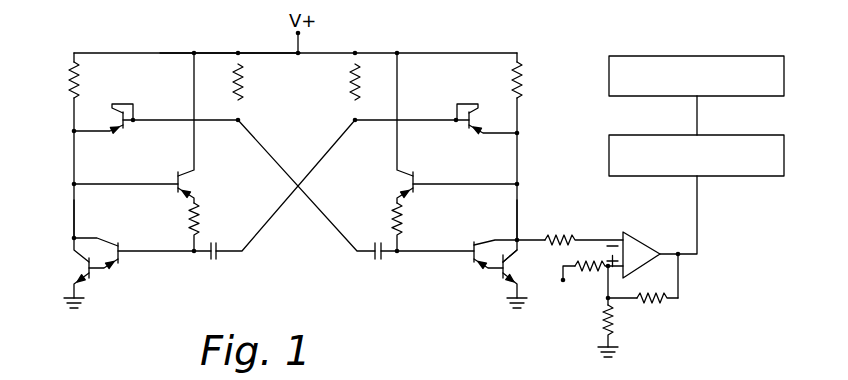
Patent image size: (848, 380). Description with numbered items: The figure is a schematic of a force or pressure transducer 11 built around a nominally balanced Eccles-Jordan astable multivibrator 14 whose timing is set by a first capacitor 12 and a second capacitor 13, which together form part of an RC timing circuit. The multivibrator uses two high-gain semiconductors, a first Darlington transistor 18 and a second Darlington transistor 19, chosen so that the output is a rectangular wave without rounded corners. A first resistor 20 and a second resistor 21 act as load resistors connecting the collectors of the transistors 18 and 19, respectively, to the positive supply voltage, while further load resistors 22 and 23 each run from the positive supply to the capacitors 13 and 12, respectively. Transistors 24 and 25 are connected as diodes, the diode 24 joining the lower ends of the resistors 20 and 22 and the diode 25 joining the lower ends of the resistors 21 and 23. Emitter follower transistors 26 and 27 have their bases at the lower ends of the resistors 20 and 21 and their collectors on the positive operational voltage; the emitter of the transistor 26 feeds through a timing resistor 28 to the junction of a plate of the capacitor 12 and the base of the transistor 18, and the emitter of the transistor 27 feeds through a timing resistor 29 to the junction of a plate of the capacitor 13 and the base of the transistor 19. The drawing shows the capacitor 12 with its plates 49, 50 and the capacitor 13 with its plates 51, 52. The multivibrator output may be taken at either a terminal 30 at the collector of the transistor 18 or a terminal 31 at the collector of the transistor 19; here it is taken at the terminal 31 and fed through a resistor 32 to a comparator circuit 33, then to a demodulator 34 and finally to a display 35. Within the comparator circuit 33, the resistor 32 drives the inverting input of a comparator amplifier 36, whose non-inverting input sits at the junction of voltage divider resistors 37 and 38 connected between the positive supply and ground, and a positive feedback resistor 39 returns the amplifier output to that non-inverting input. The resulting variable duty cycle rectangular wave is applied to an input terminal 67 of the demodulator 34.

The pressure transducer 11 is at (233, 41).
The first capacitor 12 is at (220, 273).
The second capacitor 13 is at (375, 273).
The astable multivibrator 14 is at (306, 143).
The first semiconductor 18 is at (92, 273).
The second semiconductor 19 is at (495, 271).
The first resistor 20 is at (80, 78).
The second resistor 21 is at (519, 82).
The load resistor 22 is at (243, 80).
The load resistor 23 is at (350, 92).
The diode-connected transistor 24 is at (125, 129).
The diode-connected transistor 25 is at (466, 127).
The emitter follower transistor 26 is at (172, 192).
The emitter follower transistor 27 is at (417, 193).
The timing resistor 28 is at (198, 216).
The timing resistor 29 is at (392, 216).
The terminal 30 is at (72, 237).
The terminal 31 is at (518, 239).
The resistor 32 is at (565, 238).
The comparator circuit 33 is at (690, 241).
The demodulator 34 is at (751, 177).
The display 35 is at (735, 56).
The comparator 36 is at (635, 246).
The voltage divider resistor 37 is at (602, 272).
The voltage divider resistor 38 is at (612, 331).
The positive feedback resistor 39 is at (660, 300).
The capacitor plate 49 is at (209, 258).
The capacitor plate 50 is at (217, 260).
The capacitor plate 51 is at (377, 260).
The capacitor plate 52 is at (383, 258).
The input terminal 67 is at (680, 256).